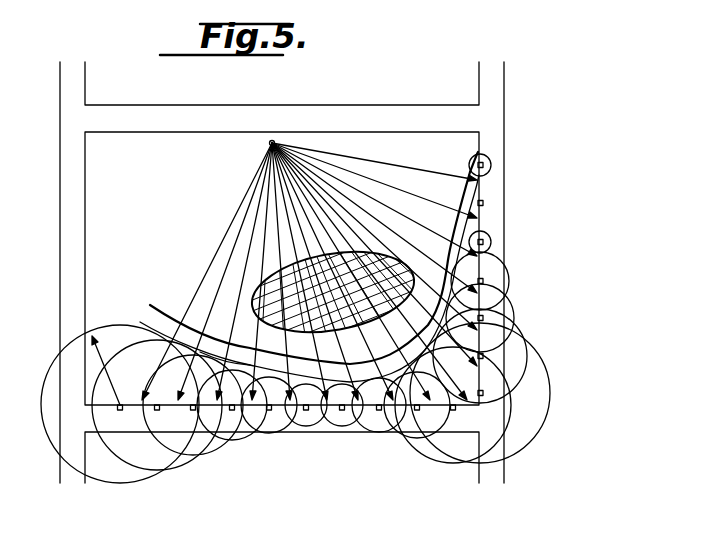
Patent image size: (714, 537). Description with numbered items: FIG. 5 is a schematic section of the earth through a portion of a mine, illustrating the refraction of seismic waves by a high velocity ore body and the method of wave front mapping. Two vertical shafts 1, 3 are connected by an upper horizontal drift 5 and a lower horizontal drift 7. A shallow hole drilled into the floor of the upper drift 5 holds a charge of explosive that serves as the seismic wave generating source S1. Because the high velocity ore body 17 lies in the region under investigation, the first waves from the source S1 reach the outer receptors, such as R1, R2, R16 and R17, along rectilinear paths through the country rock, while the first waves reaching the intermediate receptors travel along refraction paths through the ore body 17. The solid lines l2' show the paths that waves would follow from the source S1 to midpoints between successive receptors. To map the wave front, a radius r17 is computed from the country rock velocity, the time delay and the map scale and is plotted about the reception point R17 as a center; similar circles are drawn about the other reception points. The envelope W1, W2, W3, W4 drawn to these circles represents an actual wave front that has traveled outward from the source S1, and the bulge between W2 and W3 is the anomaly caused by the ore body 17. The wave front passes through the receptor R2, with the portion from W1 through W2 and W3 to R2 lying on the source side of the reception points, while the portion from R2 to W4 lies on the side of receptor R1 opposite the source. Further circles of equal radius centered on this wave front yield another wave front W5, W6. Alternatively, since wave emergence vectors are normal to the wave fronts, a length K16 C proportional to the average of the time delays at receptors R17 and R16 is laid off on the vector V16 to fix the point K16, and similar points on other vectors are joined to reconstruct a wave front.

The vertical shaft 1 is at (63, 95).
The vertical shaft 3 is at (506, 85).
The upper horizontal drift 5 is at (130, 106).
The lower horizontal drift 7 is at (320, 433).
The seismic wave generating source S1 is at (266, 144).
The wave paths l2' is at (374, 253).
The high velocity ore body 17 is at (406, 266).
The point of equal travel time C is at (298, 267).
The wave front point W5 is at (158, 303).
The wave front point W1 is at (186, 310).
The wave front point W2 is at (232, 360).
The wave front point W3 is at (455, 270).
The wave front point W4 is at (486, 158).
The wave front point W6 is at (470, 157).
The receptor R1 is at (487, 168).
The receptor R2 is at (486, 203).
The receptor R16 is at (157, 410).
The receptor R17 is at (120, 410).
The radius r17 is at (106, 354).
The point of equal travel time K16 is at (137, 400).
The wave emergence vector V16 is at (152, 376).